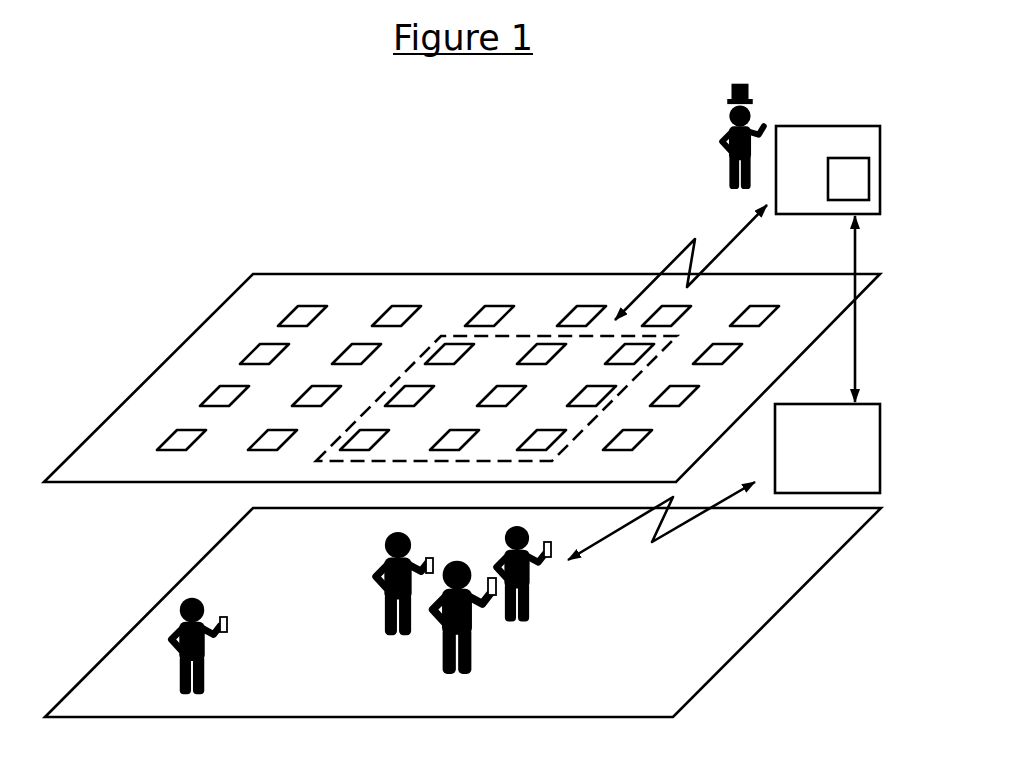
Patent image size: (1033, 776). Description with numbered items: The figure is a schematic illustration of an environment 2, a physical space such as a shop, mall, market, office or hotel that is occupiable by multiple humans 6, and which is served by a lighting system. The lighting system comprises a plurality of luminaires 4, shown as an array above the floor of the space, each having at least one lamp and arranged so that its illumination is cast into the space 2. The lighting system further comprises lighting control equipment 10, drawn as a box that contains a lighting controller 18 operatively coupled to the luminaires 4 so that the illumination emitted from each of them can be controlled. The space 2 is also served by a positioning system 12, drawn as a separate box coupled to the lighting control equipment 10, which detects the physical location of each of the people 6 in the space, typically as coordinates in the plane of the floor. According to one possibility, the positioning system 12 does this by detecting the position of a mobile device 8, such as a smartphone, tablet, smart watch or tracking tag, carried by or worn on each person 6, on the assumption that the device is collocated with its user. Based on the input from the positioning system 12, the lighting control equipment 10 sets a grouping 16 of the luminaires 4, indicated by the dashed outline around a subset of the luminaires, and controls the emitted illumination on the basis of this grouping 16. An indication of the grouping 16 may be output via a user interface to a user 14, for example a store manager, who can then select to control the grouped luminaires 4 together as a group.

The environment 2 is at (150, 558).
The luminaire 4 is at (257, 350).
The person 6 is at (200, 670).
The mobile device 8 is at (227, 616).
The lighting control equipment 10 is at (827, 126).
The positioning system 12 is at (833, 493).
The user 14 is at (728, 174).
The grouping 16 is at (448, 336).
The lighting controller 18 is at (860, 191).